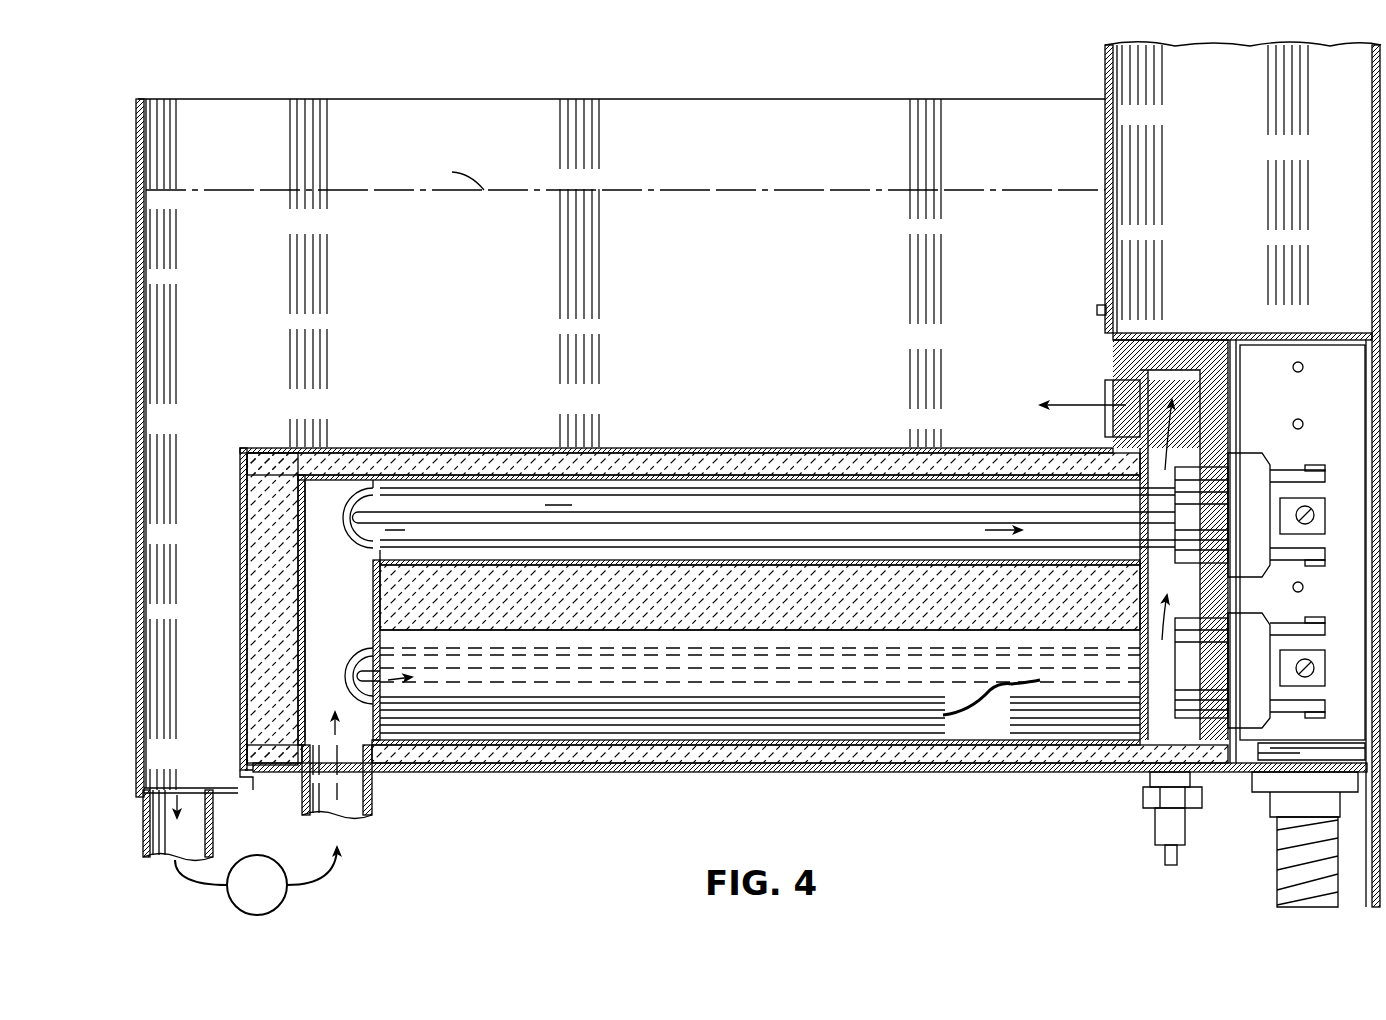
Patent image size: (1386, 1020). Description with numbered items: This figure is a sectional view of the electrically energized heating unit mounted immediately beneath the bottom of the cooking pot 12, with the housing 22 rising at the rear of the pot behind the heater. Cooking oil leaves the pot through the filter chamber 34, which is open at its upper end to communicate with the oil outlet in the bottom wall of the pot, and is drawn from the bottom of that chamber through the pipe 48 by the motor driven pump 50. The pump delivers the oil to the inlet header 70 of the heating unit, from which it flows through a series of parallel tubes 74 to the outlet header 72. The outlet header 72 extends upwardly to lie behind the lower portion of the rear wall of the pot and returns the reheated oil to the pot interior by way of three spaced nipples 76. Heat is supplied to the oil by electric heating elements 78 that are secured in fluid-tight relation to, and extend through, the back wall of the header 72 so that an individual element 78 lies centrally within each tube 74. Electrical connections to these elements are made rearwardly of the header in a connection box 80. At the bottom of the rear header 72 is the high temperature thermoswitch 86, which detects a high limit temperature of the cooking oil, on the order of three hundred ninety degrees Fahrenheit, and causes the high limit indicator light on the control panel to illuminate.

The cooking pot 12 is at (787, 118).
The housing 22 is at (1105, 78).
The filter chamber 34 is at (176, 545).
The pipe 48 is at (165, 829).
The pump 50 is at (264, 857).
The inlet header 70 is at (346, 618).
The outlet header 72 is at (1172, 385).
The parallel tubes 74 is at (676, 470).
The nipple 76 is at (1125, 393).
The heating element 78 is at (762, 490).
The connection box 80 is at (1332, 360).
The high temperature thermoswitch 86 is at (1165, 828).